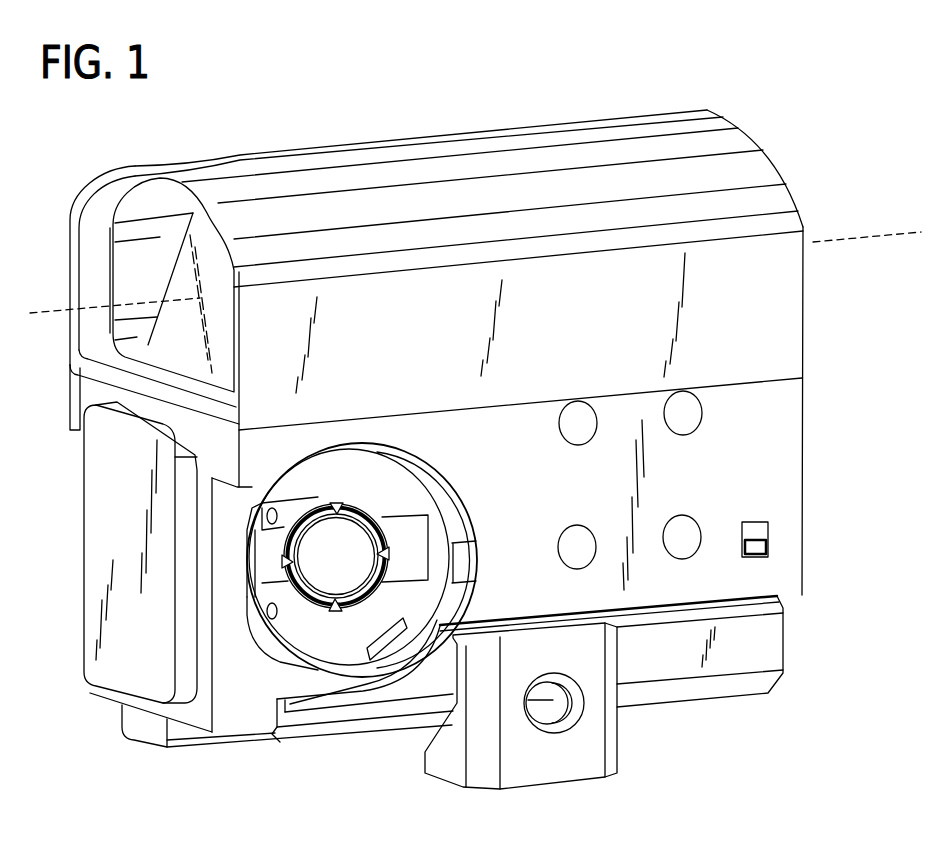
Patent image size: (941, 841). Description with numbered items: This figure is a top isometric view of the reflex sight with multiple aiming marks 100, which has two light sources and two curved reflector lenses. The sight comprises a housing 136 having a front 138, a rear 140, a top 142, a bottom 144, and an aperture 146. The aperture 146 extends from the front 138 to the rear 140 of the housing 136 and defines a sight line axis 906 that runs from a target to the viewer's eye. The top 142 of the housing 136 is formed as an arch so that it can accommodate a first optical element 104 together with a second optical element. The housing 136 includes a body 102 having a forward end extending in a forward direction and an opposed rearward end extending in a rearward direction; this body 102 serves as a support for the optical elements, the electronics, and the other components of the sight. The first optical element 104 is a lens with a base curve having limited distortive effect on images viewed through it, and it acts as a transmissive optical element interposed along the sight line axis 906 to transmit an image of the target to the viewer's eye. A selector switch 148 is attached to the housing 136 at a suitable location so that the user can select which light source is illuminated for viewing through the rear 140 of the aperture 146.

The reflex sight with multiple aiming marks 100 is at (302, 139).
The body 102 is at (745, 455).
The first optical element 104 is at (177, 348).
The housing 136 is at (530, 122).
The front 138 is at (70, 237).
The rear 140 is at (803, 348).
The top 142 is at (374, 143).
The bottom 144 is at (345, 733).
The aperture 146 is at (103, 295).
The selector switch 148 is at (772, 554).
The sight line axis 906 is at (858, 236).